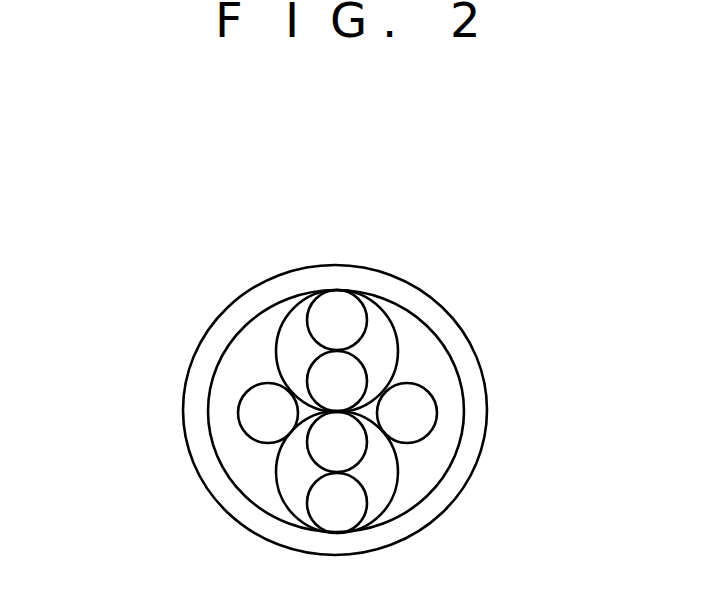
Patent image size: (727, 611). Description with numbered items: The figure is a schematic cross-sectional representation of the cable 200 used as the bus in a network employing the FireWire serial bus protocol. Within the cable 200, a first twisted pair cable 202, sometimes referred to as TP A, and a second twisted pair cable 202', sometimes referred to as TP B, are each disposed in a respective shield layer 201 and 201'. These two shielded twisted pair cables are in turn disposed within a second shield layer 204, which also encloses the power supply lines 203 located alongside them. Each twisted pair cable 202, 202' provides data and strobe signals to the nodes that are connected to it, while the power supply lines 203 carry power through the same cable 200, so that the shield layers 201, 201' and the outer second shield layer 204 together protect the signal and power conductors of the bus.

The cable 200 is at (222, 237).
The shield layer 201 is at (417, 331).
The shield layer 201' is at (431, 489).
The first twisted pair cable 202 is at (231, 338).
The second twisted pair cable 202' is at (235, 488).
The power supply lines 203 is at (265, 405).
The second shield layer 204 is at (225, 410).